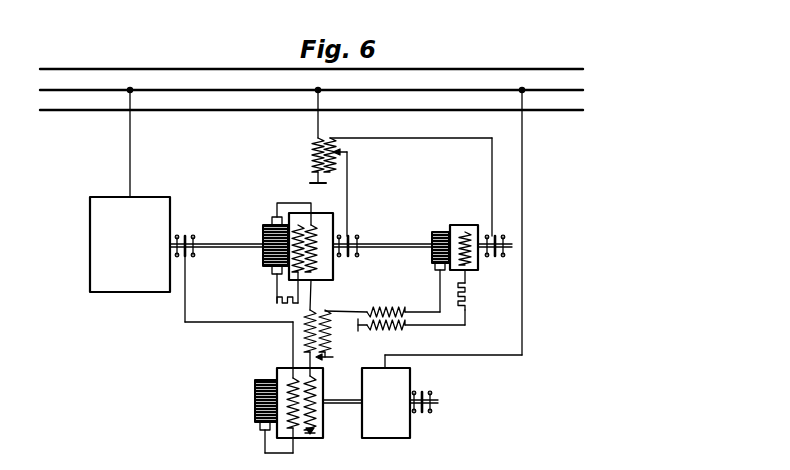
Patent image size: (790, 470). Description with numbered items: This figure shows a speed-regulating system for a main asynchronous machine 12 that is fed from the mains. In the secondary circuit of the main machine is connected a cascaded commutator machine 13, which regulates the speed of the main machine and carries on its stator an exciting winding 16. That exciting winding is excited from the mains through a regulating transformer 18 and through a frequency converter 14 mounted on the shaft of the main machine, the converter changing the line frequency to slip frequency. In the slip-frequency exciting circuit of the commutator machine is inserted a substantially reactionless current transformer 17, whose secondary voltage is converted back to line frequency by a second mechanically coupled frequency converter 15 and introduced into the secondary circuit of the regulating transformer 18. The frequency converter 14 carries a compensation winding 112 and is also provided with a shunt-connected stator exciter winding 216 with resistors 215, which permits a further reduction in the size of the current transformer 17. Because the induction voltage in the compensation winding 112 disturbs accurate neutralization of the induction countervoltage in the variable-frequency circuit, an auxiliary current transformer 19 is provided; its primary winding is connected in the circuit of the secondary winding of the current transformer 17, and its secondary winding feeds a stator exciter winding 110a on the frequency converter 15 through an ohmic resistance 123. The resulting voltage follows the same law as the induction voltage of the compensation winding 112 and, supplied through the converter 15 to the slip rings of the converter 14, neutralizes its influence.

The main asynchronous machine 12 is at (146, 204).
The cascaded commutator machine 13 is at (323, 437).
The frequency converter 14 is at (312, 260).
The second frequency converter 15 is at (468, 243).
The exciting winding 16 is at (323, 381).
The current transformer 17 is at (331, 347).
The regulating transformer 18 is at (313, 150).
The auxiliary current transformer 19 is at (385, 311).
The stator exciter winding 110a is at (458, 234).
The compensation winding 112 is at (344, 279).
The ohmic resistance 123 is at (468, 302).
The resistors 215 is at (276, 306).
The winding 216 is at (301, 228).